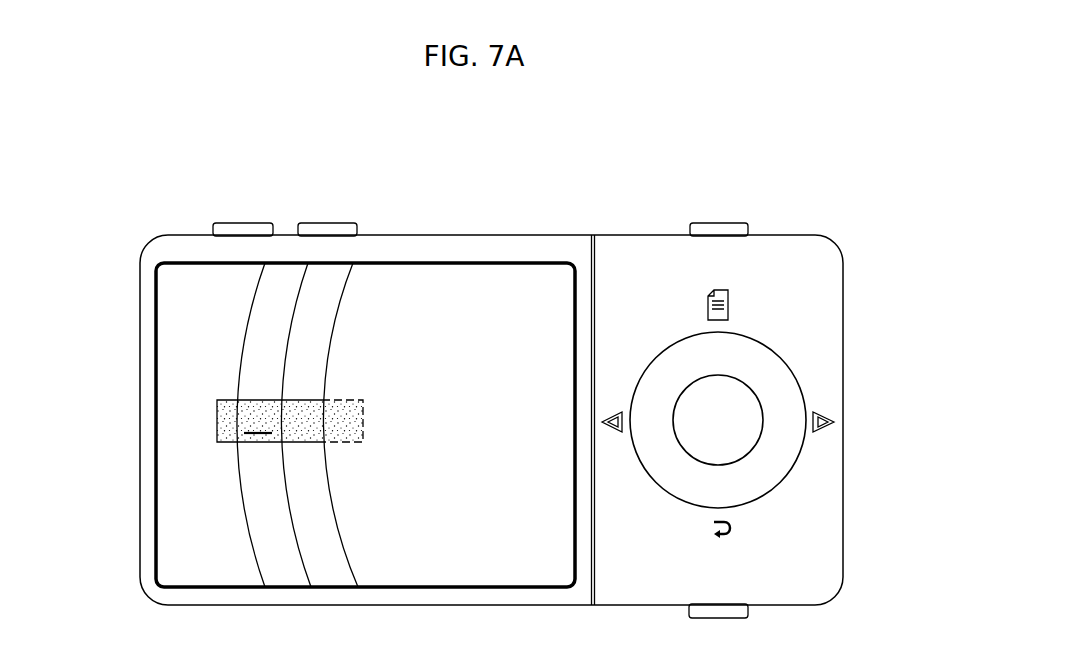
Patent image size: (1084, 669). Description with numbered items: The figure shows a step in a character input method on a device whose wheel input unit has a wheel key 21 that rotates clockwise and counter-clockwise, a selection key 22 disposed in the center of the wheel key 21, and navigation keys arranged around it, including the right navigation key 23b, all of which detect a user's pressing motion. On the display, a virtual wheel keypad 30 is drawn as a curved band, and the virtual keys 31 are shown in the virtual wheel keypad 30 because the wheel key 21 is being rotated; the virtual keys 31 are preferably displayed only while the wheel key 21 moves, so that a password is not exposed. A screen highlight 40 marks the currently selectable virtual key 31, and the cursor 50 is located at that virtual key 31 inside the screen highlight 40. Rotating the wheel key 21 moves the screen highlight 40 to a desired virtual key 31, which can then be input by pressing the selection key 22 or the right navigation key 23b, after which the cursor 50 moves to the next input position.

The wheel key 21 is at (792, 440).
The selection key 22 is at (749, 409).
The right navigation key 23b is at (836, 422).
The virtual wheel keypad 30 is at (233, 518).
The virtual key 31 is at (248, 377).
The screen highlight 40 is at (217, 422).
The cursor 50 is at (251, 437).